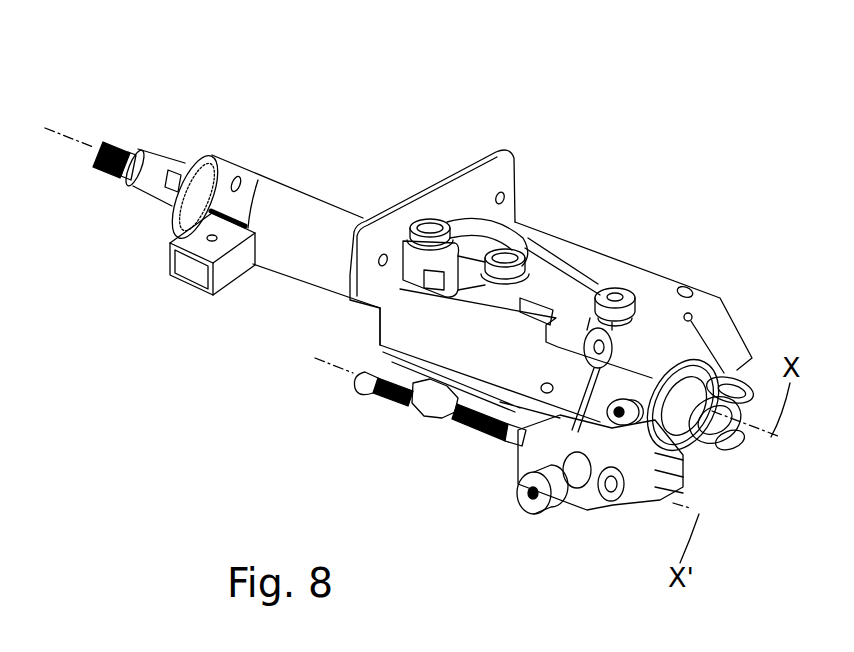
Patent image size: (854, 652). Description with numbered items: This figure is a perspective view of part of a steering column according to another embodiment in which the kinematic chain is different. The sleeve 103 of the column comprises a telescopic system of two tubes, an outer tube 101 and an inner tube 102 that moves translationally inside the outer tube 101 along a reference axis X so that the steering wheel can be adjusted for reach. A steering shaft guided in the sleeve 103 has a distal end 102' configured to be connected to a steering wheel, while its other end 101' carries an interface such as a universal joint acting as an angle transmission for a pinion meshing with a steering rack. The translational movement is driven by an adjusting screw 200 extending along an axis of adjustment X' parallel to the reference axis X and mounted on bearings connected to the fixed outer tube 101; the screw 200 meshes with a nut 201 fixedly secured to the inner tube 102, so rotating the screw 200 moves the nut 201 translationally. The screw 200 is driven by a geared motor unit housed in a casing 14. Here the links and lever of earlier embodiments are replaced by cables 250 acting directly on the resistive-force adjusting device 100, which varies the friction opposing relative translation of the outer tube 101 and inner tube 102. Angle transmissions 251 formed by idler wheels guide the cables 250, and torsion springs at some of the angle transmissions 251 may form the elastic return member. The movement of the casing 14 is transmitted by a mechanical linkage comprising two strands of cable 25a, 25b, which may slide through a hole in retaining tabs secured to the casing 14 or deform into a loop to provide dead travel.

The casing of the geared motor unit 14 is at (531, 514).
The strand of cable 25a is at (560, 420).
The strand of cable 25b is at (598, 438).
The resistive-force adjusting device 100 is at (446, 211).
The outer tube 101 is at (367, 287).
The end of the shaft 101' is at (735, 460).
The inner tube 102 is at (250, 196).
The distal end of the shaft 102' is at (126, 111).
The sleeve 103 is at (356, 114).
The adjusting screw 200 is at (381, 404).
The nut 201 is at (432, 411).
The cable 250 is at (566, 262).
The angle transmission 251 is at (628, 292).